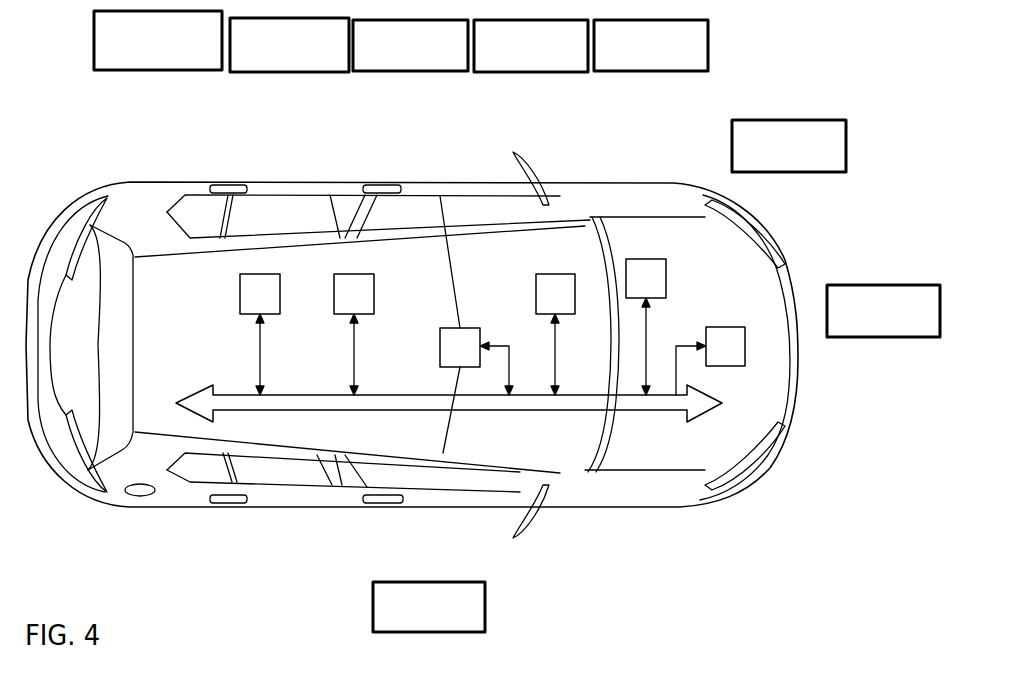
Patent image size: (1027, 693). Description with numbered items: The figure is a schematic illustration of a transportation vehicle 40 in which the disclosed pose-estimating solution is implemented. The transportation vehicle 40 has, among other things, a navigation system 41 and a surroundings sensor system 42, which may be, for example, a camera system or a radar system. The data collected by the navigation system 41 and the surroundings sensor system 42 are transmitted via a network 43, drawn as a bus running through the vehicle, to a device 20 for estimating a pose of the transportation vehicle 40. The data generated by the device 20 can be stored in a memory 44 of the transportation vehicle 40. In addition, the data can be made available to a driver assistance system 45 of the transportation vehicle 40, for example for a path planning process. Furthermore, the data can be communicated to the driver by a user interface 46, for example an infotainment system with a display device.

The device 20 is at (260, 274).
The transportation vehicle 40 is at (673, 183).
The navigation system 41 is at (354, 274).
The surroundings sensor system 42 is at (452, 328).
The network 43 is at (285, 410).
The memory 44 is at (645, 259).
The driver assistance system 45 is at (746, 347).
The user interface 46 is at (556, 274).